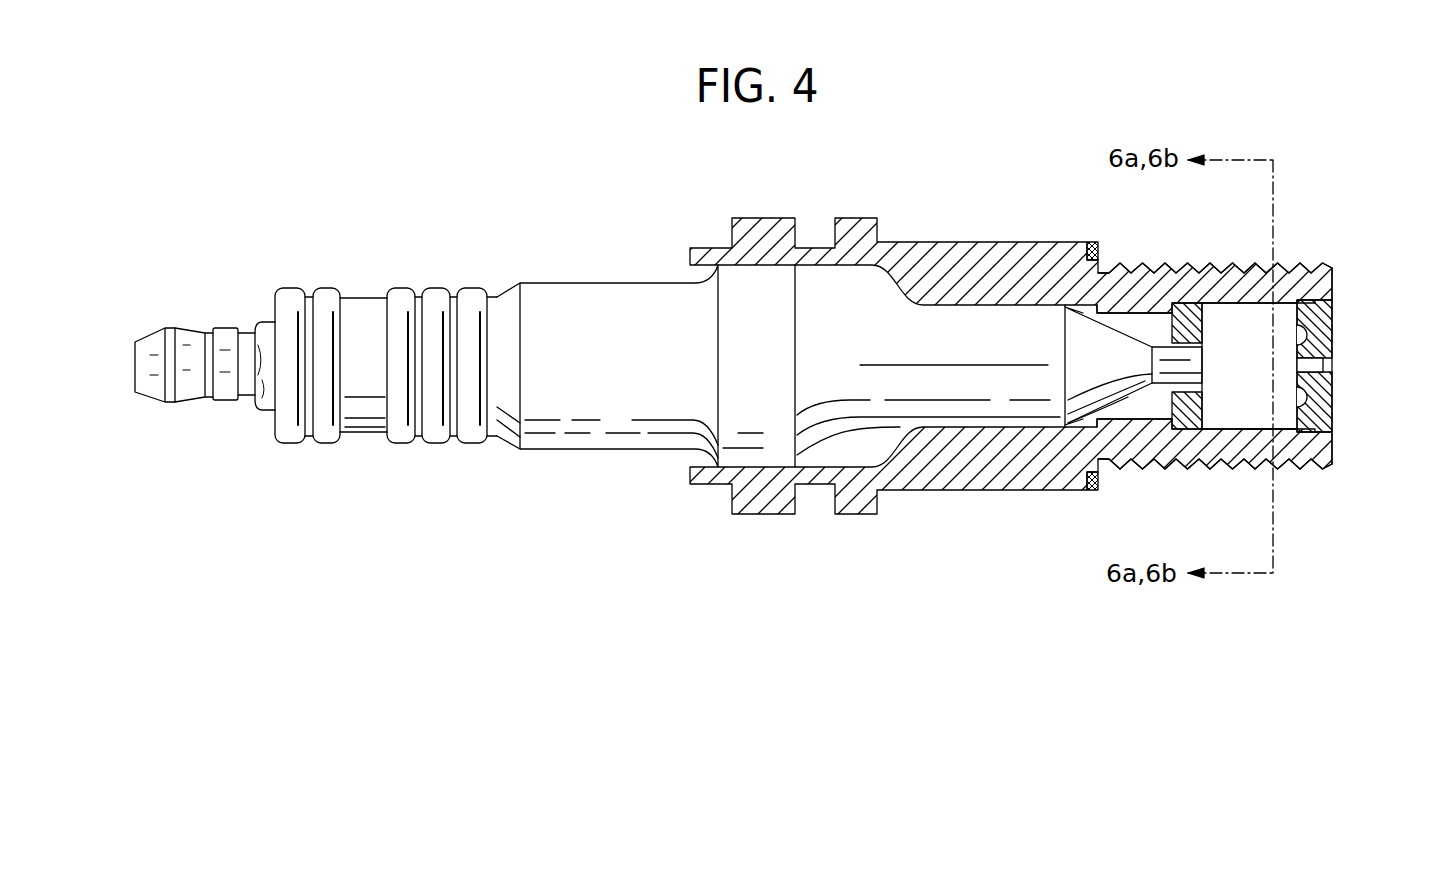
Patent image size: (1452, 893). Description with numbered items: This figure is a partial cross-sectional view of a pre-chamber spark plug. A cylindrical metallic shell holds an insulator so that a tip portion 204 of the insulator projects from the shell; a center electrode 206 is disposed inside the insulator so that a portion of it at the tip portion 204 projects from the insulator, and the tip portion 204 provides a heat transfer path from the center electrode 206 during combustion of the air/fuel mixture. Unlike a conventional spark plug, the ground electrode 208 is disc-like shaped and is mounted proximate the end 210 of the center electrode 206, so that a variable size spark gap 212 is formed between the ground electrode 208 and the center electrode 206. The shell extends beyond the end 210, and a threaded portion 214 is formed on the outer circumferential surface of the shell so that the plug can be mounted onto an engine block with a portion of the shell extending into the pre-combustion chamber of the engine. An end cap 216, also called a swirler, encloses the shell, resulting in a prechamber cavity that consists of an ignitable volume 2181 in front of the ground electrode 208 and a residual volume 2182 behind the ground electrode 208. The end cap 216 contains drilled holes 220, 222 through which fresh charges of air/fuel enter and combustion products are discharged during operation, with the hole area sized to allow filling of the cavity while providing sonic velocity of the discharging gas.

The tip portion 204 is at (1122, 345).
The ground electrode 208 is at (1186, 325).
The end 210 is at (1192, 368).
The threaded portion 214 is at (1312, 265).
The end cap 216 is at (1334, 300).
The drilled hole 222 is at (1334, 393).
The drilled hole 220 is at (1323, 367).
The variable size spark gap 212 is at (1208, 390).
The residual volume 2182 is at (1135, 415).
The center electrode 206 is at (1163, 413).
The ignitable volume 2181 is at (1286, 423).